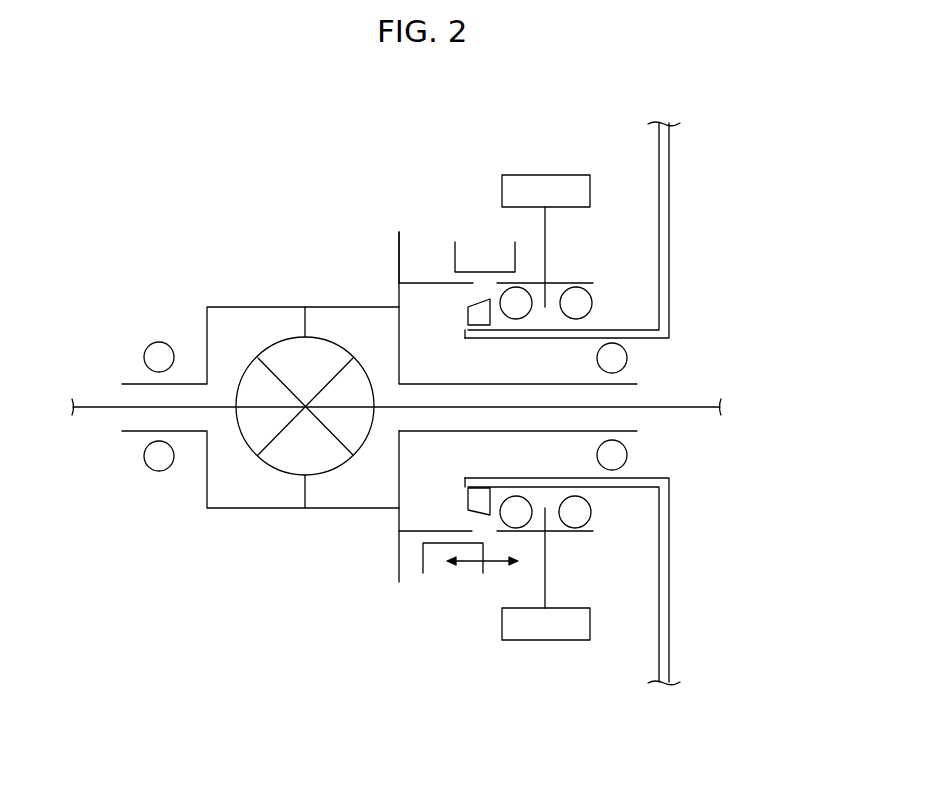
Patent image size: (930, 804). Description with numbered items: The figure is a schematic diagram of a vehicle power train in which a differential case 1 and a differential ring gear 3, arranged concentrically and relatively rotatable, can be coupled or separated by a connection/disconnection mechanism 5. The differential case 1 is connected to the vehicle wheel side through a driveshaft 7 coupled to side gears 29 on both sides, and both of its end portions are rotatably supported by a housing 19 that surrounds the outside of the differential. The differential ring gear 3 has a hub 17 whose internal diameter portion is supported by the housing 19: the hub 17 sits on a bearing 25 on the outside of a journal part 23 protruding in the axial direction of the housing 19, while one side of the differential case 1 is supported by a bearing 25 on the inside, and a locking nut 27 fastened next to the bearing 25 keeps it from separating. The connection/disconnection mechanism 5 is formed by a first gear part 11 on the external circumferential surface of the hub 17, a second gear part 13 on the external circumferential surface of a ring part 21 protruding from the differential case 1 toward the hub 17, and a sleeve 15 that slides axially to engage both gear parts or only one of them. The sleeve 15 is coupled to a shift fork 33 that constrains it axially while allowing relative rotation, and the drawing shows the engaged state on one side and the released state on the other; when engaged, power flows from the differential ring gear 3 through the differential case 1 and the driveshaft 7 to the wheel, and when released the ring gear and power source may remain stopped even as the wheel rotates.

The differential case 1 is at (240, 307).
The differential ring gear 3 is at (565, 182).
The connection/disconnection mechanism 5 is at (510, 115).
The driveshaft 7 is at (105, 407).
The first gear part 11 is at (532, 283).
The second gear part 13 is at (433, 283).
The sleeve 15 is at (487, 272).
The hub 17 is at (580, 282).
The housing 19 is at (663, 150).
The ring part 21 is at (440, 533).
The journal part 23 is at (613, 482).
The bearing 25 is at (518, 303).
The locking nut 27 is at (480, 515).
The side gear 29 is at (342, 416).
The shift fork 33 is at (421, 557).